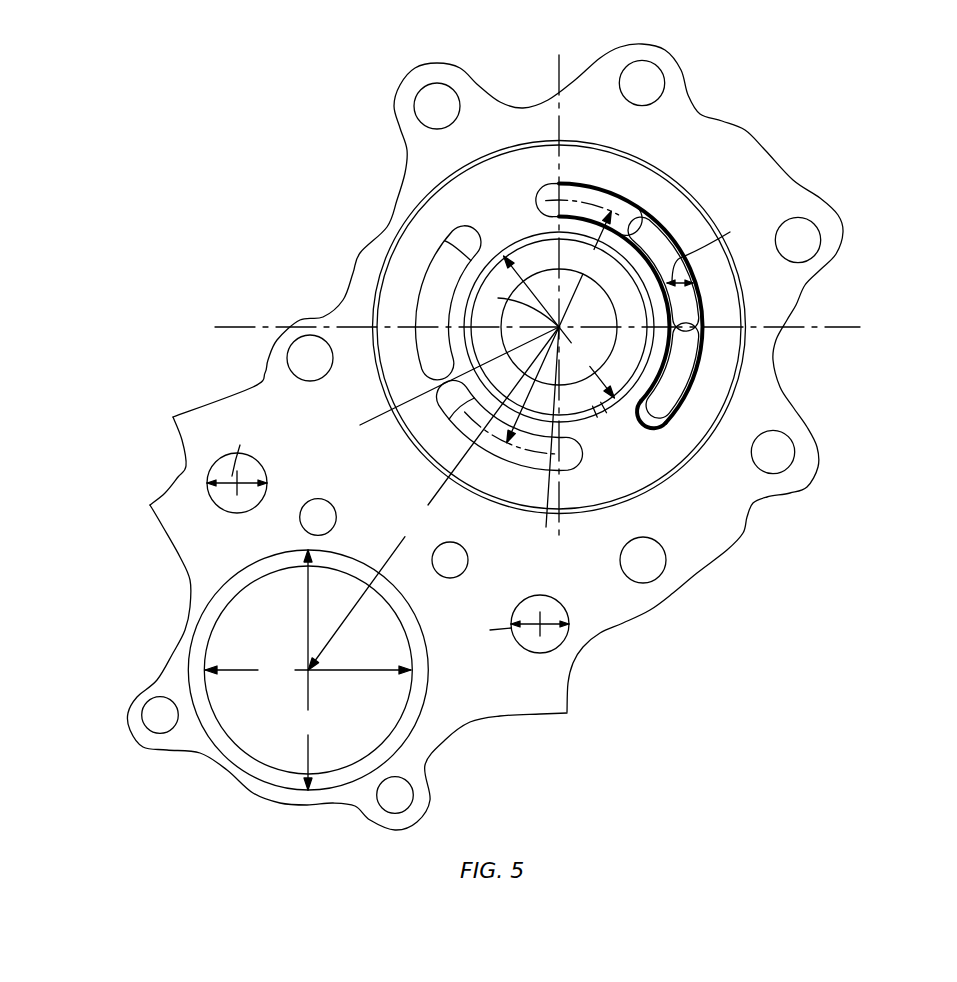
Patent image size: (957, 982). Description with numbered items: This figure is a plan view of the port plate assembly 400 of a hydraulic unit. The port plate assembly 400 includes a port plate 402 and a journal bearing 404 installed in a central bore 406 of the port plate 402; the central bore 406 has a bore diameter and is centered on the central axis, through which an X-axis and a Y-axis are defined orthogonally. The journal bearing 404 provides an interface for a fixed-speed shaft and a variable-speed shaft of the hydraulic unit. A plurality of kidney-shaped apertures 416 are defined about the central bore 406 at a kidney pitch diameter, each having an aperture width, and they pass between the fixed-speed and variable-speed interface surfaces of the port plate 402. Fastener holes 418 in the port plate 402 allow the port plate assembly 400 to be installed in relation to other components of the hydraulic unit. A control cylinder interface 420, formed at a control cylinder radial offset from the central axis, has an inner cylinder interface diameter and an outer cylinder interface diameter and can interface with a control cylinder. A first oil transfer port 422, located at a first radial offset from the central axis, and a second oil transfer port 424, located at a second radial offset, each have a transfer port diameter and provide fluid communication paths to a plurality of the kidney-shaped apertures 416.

The port plate assembly 400 is at (864, 120).
The port plate 402 is at (353, 260).
The journal bearing 404 is at (619, 378).
The central bore 406 is at (645, 360).
The kidney-shaped apertures 416 is at (620, 203).
The fastener holes 418 is at (805, 230).
The control cylinder interface 420 is at (407, 727).
The first oil transfer port 422 is at (212, 495).
The second oil transfer port 424 is at (555, 645).